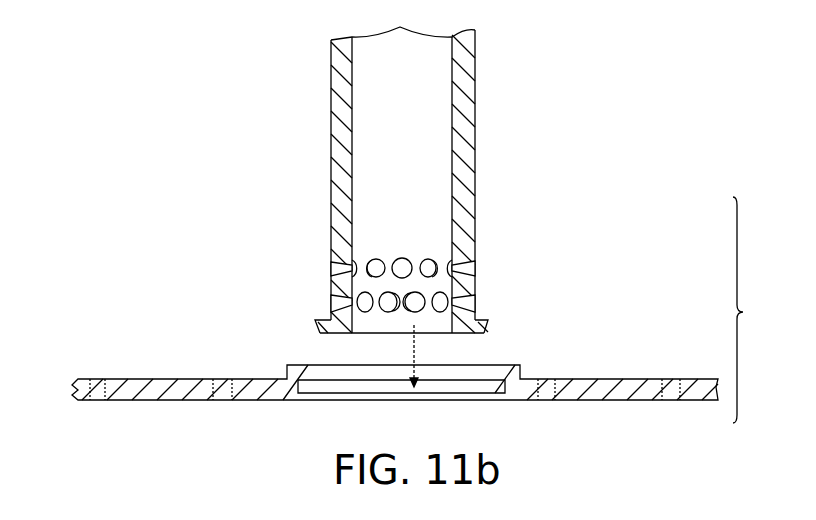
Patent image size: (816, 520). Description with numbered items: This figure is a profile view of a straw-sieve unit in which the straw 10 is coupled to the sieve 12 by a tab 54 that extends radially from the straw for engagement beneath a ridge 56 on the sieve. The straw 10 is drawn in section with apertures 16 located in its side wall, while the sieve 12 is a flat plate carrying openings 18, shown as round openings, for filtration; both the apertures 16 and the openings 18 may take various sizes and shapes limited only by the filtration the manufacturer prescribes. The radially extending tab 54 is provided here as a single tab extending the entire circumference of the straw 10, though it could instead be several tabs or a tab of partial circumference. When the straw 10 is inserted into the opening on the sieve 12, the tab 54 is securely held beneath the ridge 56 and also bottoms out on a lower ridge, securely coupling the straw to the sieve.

The straw 10 is at (475, 170).
The sieve 12 is at (645, 378).
The apertures 16 is at (427, 259).
The openings 18 is at (668, 401).
The tab 54 is at (487, 318).
The ridge 56 is at (520, 379).